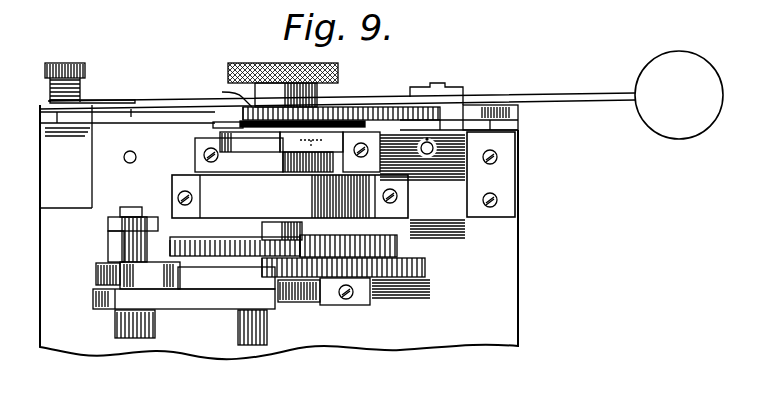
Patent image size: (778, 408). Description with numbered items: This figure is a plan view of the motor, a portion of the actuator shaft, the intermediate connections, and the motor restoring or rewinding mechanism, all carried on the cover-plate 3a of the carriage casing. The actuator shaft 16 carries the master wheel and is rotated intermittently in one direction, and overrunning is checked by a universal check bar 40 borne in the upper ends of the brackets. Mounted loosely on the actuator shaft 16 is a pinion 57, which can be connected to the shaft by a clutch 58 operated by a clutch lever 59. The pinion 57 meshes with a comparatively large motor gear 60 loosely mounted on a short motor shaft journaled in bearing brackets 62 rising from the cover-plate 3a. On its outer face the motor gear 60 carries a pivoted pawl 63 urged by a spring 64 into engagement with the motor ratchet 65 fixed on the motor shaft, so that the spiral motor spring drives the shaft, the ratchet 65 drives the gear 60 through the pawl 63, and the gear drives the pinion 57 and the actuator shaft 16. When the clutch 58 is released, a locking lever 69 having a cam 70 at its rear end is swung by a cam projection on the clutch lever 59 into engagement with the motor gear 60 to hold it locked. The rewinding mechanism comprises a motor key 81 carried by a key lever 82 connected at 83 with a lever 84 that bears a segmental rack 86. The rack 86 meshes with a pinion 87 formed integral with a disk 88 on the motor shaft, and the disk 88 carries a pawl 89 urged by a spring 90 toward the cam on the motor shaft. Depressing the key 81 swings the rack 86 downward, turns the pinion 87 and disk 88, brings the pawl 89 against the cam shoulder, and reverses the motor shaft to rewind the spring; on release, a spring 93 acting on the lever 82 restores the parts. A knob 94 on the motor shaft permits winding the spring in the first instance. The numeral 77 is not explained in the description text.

The cover-plate 3a is at (519, 270).
The actuator shaft 16 is at (136, 207).
The universal check bar 40 is at (238, 346).
The loose pinion 57 is at (98, 272).
The clutch 58 is at (110, 249).
The clutch lever 59 is at (110, 223).
The motor gear 60 is at (426, 275).
The bearing brackets 62 is at (328, 300).
The pivoted pawl 63 is at (183, 250).
The spring 64 is at (396, 246).
The motor ratchet 65 is at (217, 255).
The locking lever 69 is at (233, 282).
The cam 70 is at (170, 310).
The bar 77 is at (104, 304).
The motor key 81 is at (655, 70).
The key lever 82 is at (543, 95).
The connection 83 is at (470, 103).
The lever 84 is at (456, 112).
The segmental rack 86 is at (392, 95).
The pinion 87 is at (224, 93).
The disk 88 is at (215, 128).
The pawl 89 is at (331, 152).
The spring 90 is at (254, 141).
The spring 93 is at (98, 100).
The knob 94 is at (340, 72).